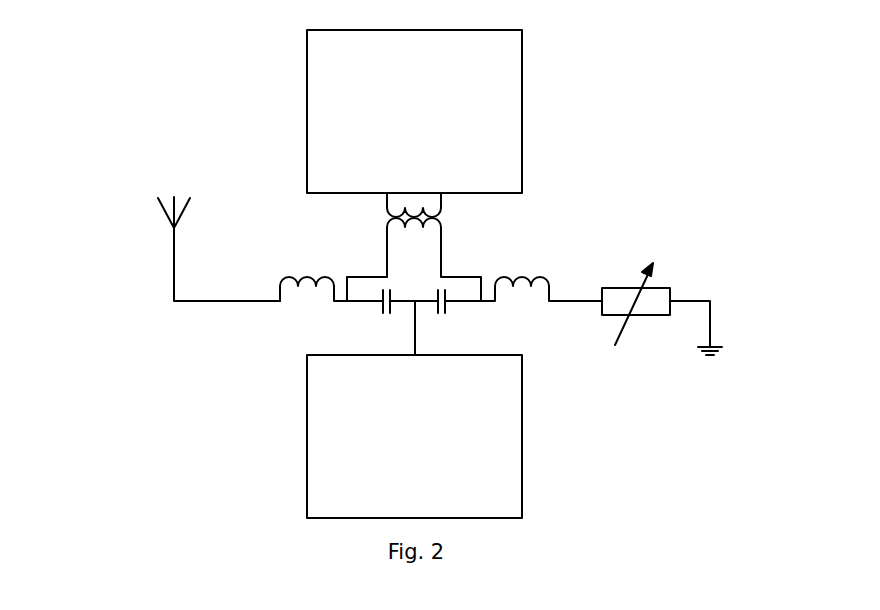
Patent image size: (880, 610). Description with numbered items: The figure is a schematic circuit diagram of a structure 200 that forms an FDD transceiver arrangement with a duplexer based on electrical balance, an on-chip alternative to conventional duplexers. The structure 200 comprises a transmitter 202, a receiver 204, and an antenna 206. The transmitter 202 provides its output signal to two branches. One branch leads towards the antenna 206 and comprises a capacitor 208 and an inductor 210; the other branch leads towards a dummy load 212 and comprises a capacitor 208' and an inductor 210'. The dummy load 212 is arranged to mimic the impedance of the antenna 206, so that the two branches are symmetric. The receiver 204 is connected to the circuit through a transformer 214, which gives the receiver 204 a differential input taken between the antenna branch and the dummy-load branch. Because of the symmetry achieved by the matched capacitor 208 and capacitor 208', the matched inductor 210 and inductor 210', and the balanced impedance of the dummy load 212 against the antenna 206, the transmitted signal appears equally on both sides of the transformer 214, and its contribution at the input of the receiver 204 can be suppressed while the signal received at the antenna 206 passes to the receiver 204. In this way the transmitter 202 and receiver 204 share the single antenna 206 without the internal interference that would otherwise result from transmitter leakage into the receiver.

The structure 200 is at (519, 236).
The transmitter 202 is at (324, 380).
The receiver 204 is at (324, 149).
The antenna 206 is at (174, 228).
The capacitor 208 is at (361, 316).
The capacitor 208' is at (471, 316).
The inductor 210 is at (280, 310).
The inductor 210' is at (541, 321).
The dummy load 212 is at (643, 306).
The transformer 214 is at (392, 214).